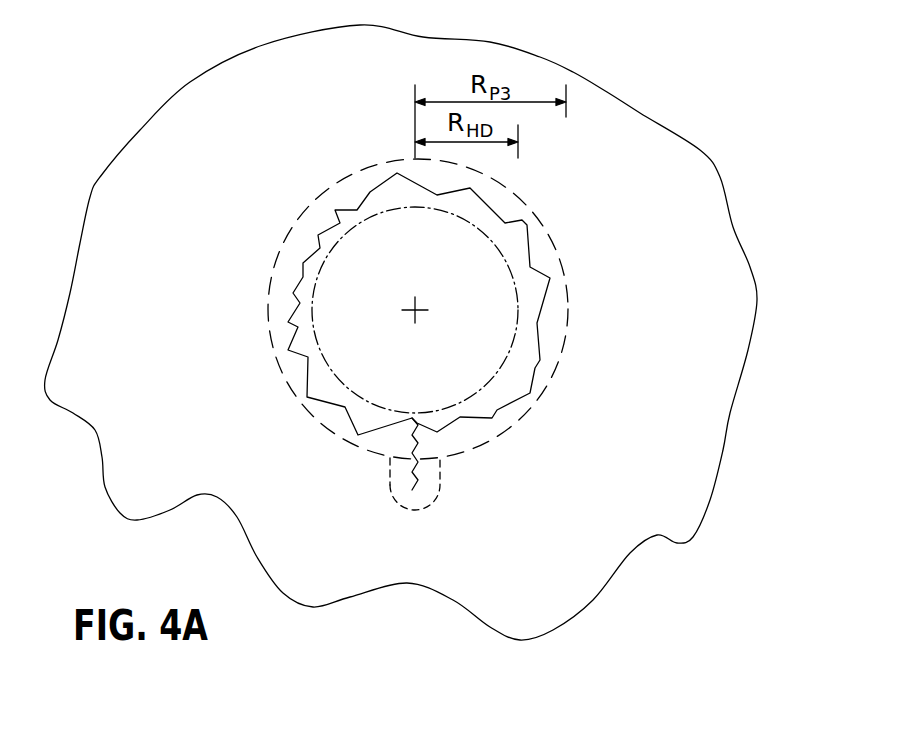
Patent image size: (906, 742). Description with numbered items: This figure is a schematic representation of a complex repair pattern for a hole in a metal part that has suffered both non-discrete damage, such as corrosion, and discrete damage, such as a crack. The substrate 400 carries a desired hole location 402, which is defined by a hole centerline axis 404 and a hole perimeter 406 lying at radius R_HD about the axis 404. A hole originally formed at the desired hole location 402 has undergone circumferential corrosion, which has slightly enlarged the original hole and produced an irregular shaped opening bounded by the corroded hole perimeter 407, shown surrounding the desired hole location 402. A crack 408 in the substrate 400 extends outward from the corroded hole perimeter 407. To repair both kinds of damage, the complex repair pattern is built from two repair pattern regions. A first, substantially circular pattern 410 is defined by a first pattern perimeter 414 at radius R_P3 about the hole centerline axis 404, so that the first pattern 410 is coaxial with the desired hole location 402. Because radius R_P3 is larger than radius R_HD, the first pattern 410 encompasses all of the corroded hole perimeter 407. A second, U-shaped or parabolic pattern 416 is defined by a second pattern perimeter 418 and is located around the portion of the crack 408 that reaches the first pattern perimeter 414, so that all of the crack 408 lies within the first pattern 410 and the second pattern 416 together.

The substrate 400 is at (630, 127).
The desired hole location 402 is at (525, 270).
The hole centerline axis 404 is at (421, 307).
The hole perimeter 406 is at (517, 323).
The corroded hole perimeter 407 is at (540, 368).
The crack 408 is at (418, 480).
The first pattern 410 is at (276, 234).
The first pattern perimeter 414 is at (352, 177).
The second pattern 416 is at (442, 505).
The second pattern perimeter 418 is at (390, 473).